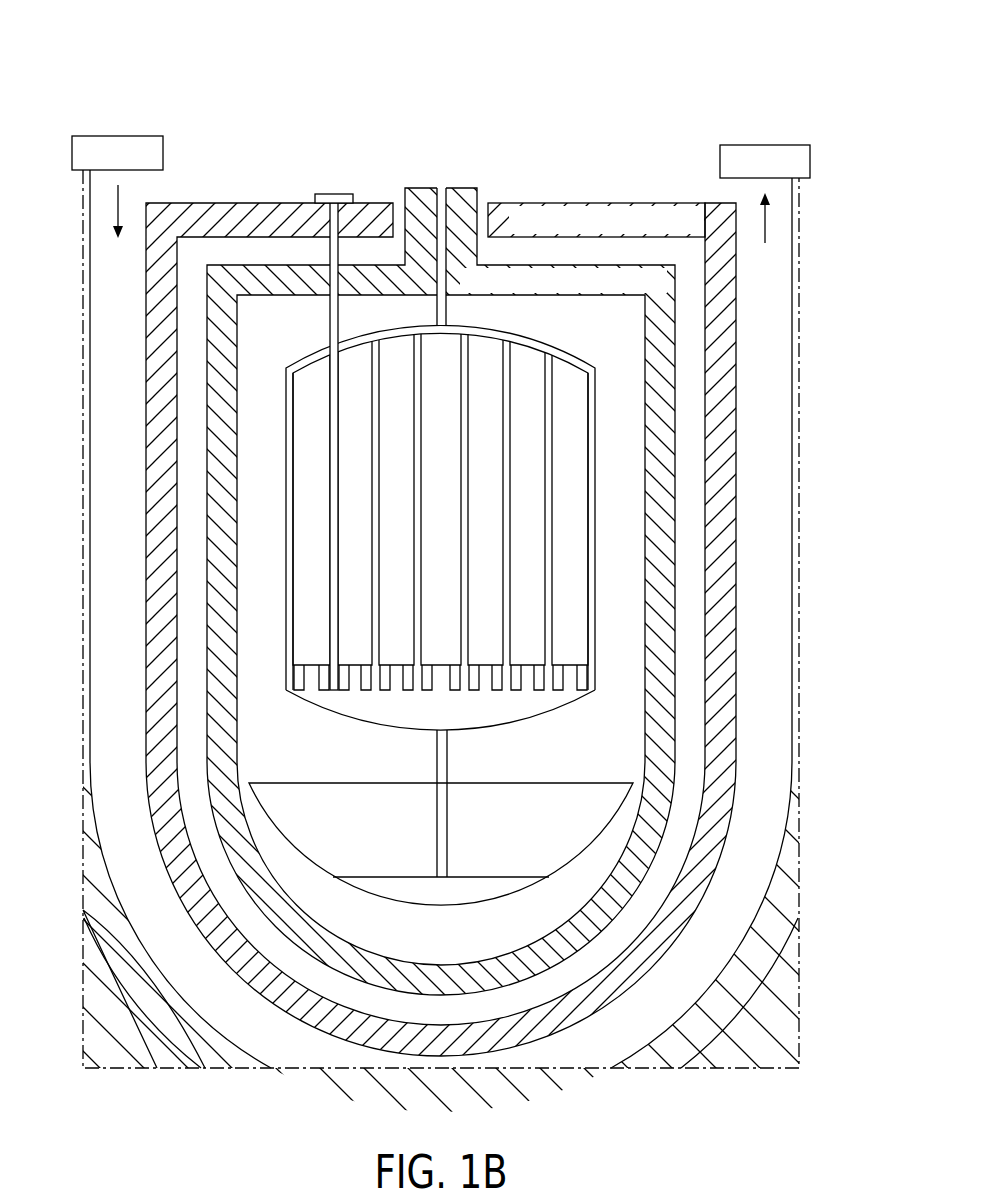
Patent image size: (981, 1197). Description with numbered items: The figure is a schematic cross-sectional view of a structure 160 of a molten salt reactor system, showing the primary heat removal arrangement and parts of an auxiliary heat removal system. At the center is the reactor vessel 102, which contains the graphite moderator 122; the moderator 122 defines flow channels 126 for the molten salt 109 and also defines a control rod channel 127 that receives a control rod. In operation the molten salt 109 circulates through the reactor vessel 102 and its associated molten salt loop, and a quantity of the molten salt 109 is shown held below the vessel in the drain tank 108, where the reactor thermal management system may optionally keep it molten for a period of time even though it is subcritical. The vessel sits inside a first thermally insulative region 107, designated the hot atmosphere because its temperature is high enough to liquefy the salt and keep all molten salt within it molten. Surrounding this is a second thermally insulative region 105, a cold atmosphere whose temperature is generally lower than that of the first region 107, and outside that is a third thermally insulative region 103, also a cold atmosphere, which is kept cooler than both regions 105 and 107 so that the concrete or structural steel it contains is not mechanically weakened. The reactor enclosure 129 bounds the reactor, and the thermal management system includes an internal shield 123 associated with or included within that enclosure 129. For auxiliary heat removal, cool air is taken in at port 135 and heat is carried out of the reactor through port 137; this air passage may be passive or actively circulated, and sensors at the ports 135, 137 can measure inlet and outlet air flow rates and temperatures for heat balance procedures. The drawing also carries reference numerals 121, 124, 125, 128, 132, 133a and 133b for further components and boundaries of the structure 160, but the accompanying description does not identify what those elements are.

The structure 160 is at (754, 66).
The reactor vessel 102 is at (598, 520).
The third thermally insulative region 103 is at (602, 1045).
The second thermally insulative region 105 is at (695, 725).
The first thermally insulative region 107 is at (622, 668).
The drain tank 108 is at (540, 781).
The molten salt 109 is at (481, 889).
The thermal insulation 121 is at (612, 272).
The graphite moderator 122 is at (593, 468).
The internal shield 123 is at (671, 203).
The basket 124 is at (551, 349).
The rod 125 is at (334, 228).
The flow channels 126 is at (338, 353).
The control rod channel 127 is at (337, 678).
The inner vessel wall 128 is at (646, 405).
The reactor enclosure 129 is at (738, 316).
The enclosure boundary 132 is at (798, 242).
The upper shaft 133a is at (447, 310).
The lower shaft 133b is at (437, 753).
The port 135 is at (112, 161).
The port 137 is at (769, 172).